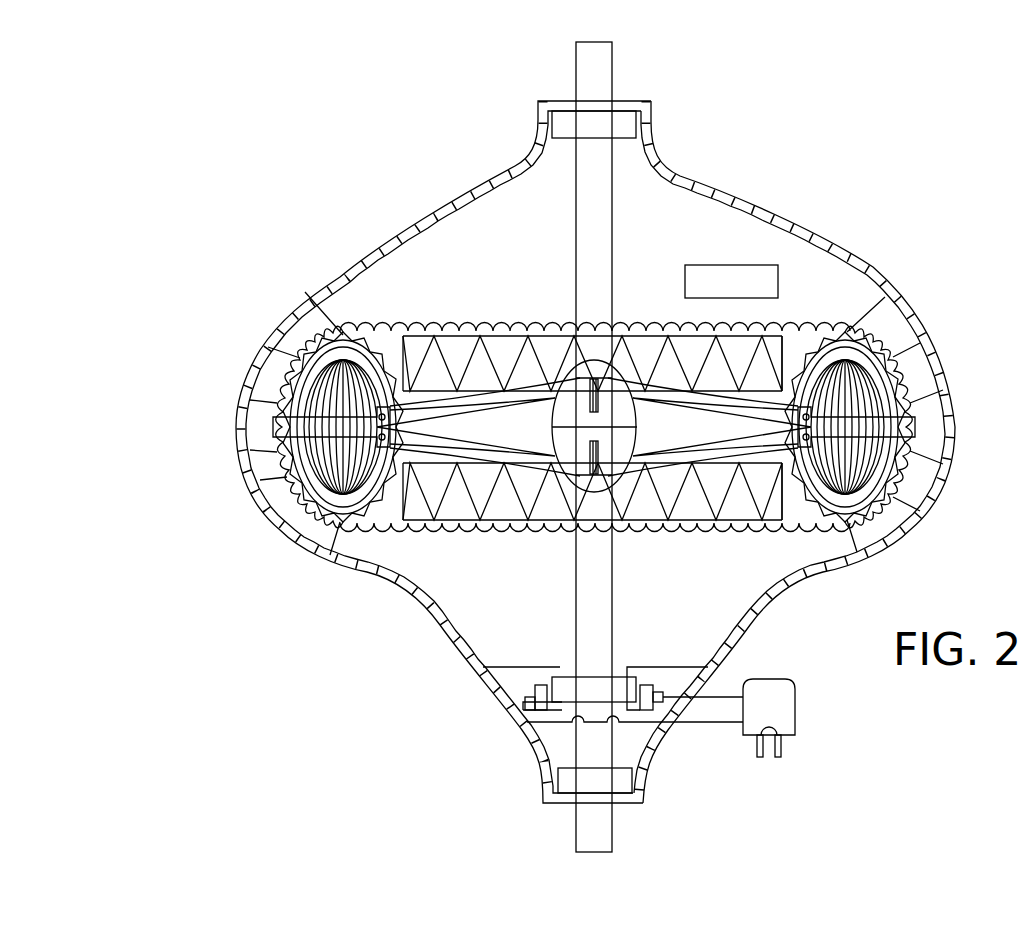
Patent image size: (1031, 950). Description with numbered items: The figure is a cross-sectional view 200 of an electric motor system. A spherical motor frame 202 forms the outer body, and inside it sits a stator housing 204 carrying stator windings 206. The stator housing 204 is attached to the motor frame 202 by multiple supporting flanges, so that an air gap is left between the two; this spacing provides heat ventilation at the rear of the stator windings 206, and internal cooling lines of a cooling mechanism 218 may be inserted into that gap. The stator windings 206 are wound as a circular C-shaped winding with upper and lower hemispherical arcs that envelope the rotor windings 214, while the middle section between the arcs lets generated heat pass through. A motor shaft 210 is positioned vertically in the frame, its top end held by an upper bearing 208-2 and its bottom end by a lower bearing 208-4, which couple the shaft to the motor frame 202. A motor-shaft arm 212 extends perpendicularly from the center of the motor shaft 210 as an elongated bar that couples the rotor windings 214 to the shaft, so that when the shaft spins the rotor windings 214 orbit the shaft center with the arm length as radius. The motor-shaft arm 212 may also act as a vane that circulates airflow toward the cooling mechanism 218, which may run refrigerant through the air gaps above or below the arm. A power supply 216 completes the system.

The cross-sectional view 200 is at (342, 117).
The spherical motor frame 202 is at (408, 223).
The stator housing 204 is at (300, 328).
The stator windings 206 is at (277, 427).
The upper bearing 208-2 is at (578, 127).
The lower bearing 208-4 is at (571, 684).
The motor shaft 210 is at (582, 270).
The motor-shaft arm 212 is at (540, 390).
The rotor windings 214 is at (333, 389).
The power supply 216 is at (787, 743).
The cooling mechanism 218 is at (772, 292).